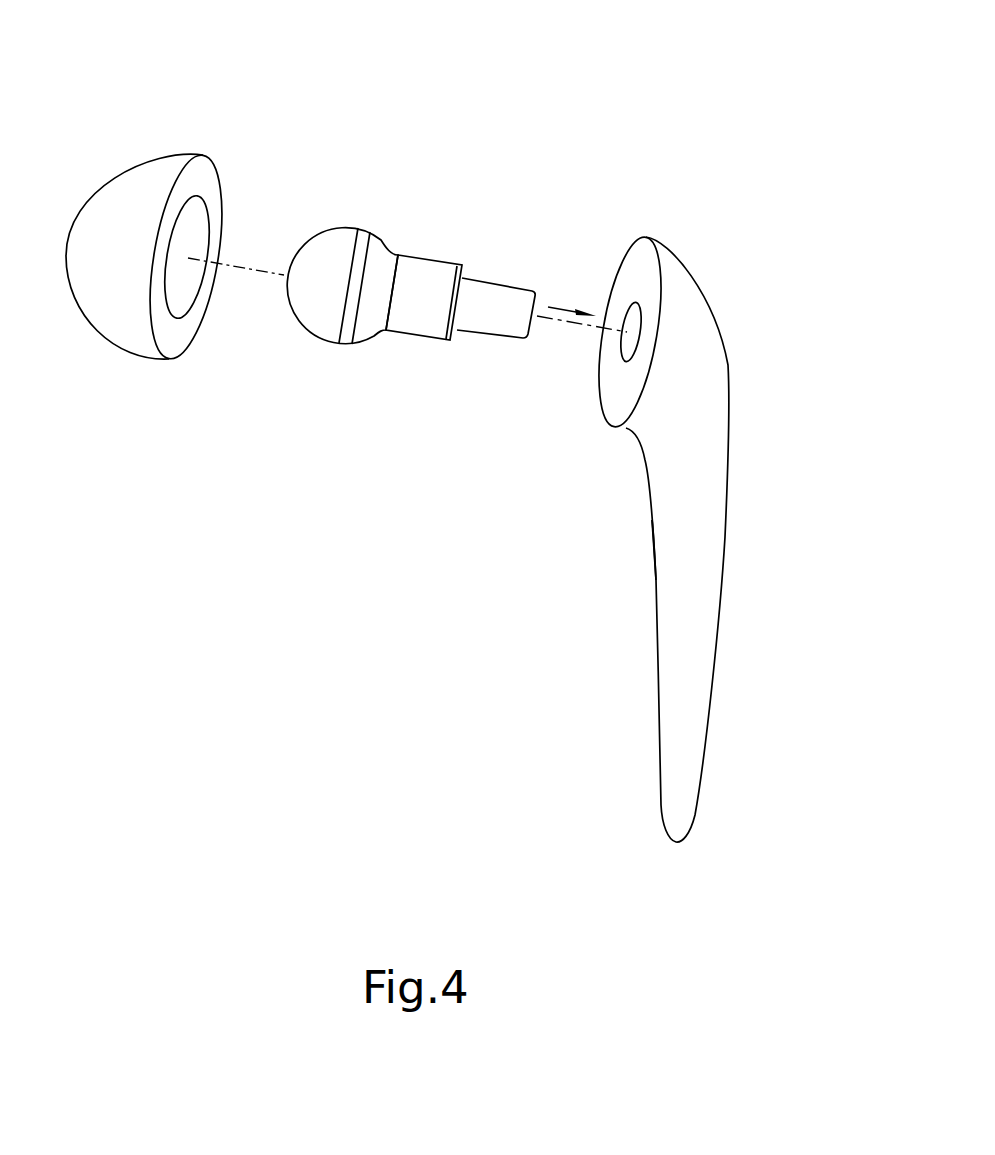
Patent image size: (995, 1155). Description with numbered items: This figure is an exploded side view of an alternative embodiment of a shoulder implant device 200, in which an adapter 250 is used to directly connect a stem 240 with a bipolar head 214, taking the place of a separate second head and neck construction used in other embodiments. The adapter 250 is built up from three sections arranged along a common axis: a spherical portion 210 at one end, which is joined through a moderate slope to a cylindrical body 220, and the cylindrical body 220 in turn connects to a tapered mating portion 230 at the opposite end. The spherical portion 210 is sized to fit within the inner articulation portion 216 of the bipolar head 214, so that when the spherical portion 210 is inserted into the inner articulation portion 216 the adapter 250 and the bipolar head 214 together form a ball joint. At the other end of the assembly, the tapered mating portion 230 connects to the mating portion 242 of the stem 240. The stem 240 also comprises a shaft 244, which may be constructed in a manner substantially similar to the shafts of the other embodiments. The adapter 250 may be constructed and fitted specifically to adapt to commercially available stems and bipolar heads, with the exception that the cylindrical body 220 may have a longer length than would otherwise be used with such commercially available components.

The shoulder implant device 200 is at (203, 78).
The spherical portion 210 is at (373, 333).
The bipolar head 214 is at (108, 318).
The inner articulation portion 216 is at (197, 218).
The cylindrical body 220 is at (443, 268).
The tapered mating portion 230 is at (490, 337).
The stem 240 is at (741, 476).
The mating portion 242 is at (622, 350).
The shaft 244 is at (705, 627).
The adapter 250 is at (343, 228).